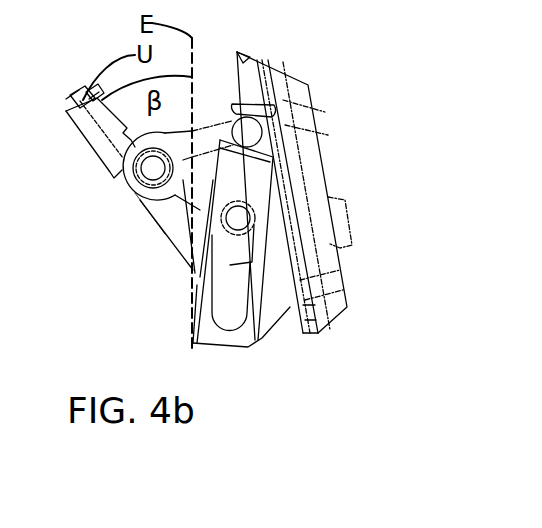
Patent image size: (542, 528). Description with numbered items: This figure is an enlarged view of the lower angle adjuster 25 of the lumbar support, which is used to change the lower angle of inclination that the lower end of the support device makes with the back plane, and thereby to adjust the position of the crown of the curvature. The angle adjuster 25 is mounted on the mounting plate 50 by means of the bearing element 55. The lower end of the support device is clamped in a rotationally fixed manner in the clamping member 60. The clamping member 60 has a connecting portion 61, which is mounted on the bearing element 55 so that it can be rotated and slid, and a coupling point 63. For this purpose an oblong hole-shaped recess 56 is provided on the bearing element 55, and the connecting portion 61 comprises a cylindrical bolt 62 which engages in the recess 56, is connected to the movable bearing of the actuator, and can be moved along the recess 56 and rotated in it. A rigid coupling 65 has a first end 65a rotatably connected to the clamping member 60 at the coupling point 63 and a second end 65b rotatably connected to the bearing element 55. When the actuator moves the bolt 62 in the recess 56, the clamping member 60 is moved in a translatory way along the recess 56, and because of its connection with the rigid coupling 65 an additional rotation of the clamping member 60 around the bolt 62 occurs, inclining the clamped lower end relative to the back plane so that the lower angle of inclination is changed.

The angle adjuster 25 is at (165, 234).
The mounting plate 50 is at (287, 198).
The bearing element 55 is at (285, 300).
The oblong hole-shaped recess 56 is at (238, 295).
The clamping member 60 is at (107, 168).
The connecting portion 61 is at (228, 254).
The cylindrical bolt 62 is at (238, 220).
The coupling point 63 is at (153, 170).
The coupling 65 is at (205, 128).
The first end 65a is at (173, 186).
The second end 65b is at (250, 130).